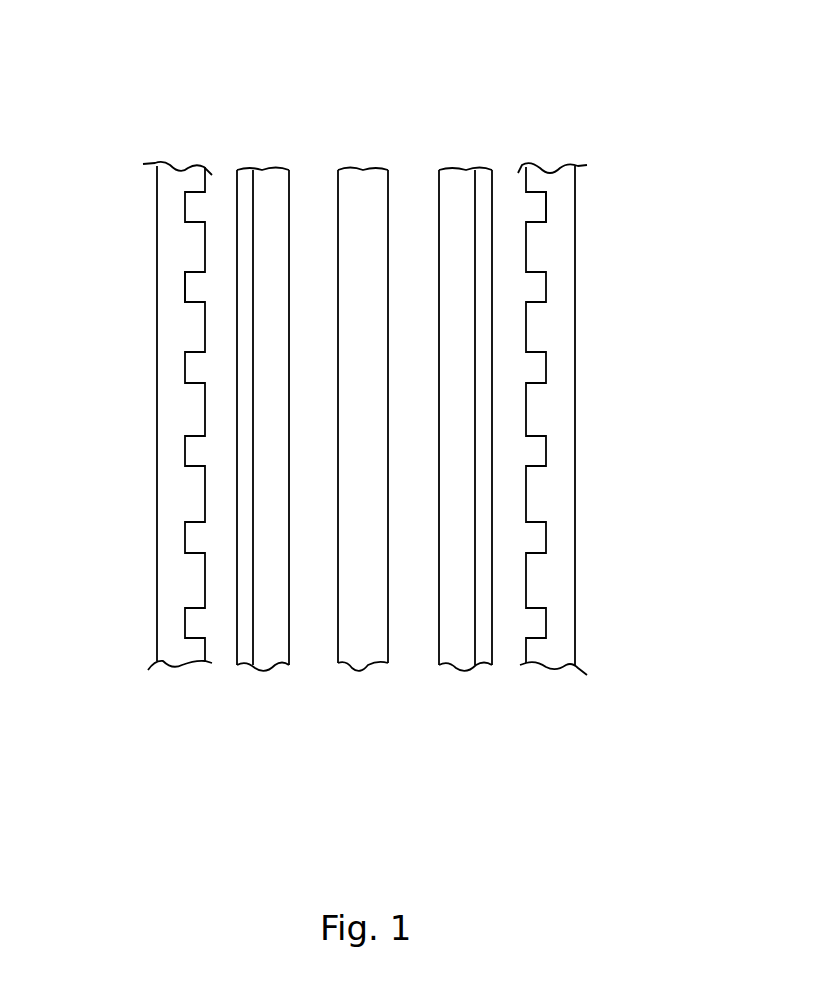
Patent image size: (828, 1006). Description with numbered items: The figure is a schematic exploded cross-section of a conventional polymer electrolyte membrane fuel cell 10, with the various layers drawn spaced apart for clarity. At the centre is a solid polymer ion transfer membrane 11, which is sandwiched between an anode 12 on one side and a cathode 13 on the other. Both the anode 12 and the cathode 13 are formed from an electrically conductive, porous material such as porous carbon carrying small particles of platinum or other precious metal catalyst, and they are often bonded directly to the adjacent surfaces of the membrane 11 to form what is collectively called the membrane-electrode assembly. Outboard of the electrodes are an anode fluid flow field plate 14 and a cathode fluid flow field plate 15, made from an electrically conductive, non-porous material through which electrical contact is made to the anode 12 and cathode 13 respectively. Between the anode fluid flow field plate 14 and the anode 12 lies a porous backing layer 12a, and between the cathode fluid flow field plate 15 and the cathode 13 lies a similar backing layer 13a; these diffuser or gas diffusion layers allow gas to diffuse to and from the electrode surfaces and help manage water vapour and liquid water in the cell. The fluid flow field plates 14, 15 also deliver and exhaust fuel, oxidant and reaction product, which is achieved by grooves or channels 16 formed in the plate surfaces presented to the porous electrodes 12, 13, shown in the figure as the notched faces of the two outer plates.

The fuel cell 10 is at (138, 130).
The solid polymer ion transfer membrane 11 is at (368, 648).
The anode 12 is at (251, 413).
The backing layer 12a is at (241, 176).
The cathode 13 is at (475, 412).
The backing layer 13a is at (482, 178).
The anode fluid flow field plate 14 is at (180, 652).
The cathode fluid flow field plate 15 is at (562, 637).
The channels 16 is at (187, 287).